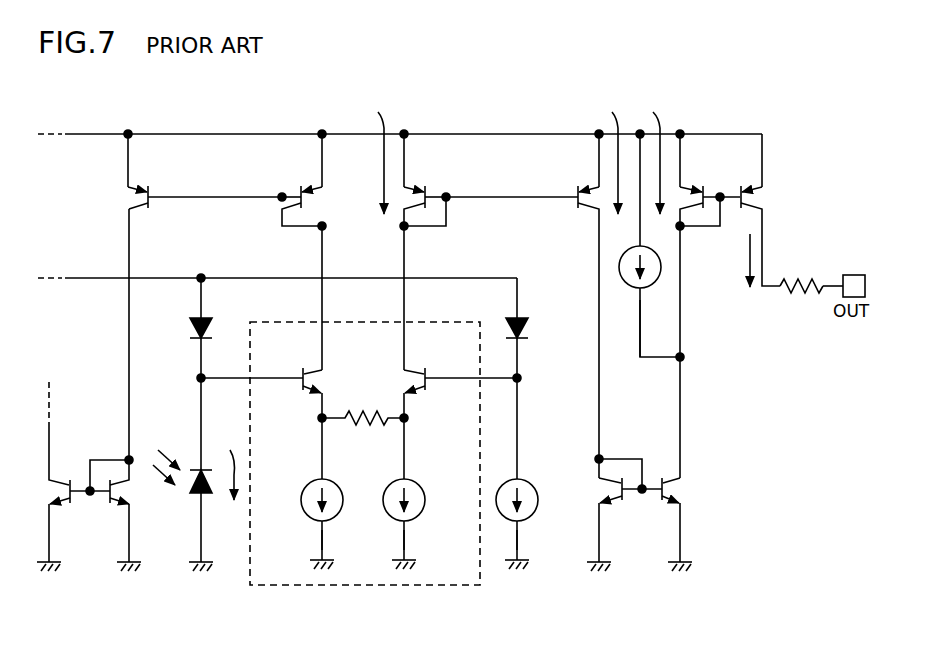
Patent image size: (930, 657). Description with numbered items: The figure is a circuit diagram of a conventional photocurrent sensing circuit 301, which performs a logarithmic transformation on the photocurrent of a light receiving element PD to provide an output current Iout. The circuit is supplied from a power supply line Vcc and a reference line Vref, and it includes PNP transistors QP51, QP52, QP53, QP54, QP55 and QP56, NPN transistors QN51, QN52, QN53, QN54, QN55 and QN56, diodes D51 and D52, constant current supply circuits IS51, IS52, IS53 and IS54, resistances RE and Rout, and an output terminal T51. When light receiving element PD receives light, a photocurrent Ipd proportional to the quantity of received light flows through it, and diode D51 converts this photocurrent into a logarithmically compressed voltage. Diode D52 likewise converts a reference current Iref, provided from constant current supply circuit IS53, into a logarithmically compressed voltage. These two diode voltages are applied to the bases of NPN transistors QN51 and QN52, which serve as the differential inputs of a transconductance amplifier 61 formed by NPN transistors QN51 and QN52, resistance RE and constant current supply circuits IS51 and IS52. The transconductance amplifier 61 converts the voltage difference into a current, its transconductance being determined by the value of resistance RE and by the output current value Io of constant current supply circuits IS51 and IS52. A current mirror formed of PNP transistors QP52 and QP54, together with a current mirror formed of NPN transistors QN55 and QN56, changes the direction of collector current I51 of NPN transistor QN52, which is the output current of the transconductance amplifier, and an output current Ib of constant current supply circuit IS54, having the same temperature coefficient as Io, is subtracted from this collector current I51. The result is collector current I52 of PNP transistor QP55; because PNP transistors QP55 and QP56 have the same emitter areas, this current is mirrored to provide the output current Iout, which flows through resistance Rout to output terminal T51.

The photocurrent sensing circuit 301 is at (860, 96).
The transconductance amplifier 61 is at (364, 586).
The power supply line Vcc is at (90, 133).
The reference voltage line Vref is at (94, 277).
The PNP transistor QP51 is at (299, 190).
The PNP transistor QP52 is at (440, 170).
The PNP transistor QP53 is at (165, 170).
The PNP transistor QP54 is at (577, 190).
The PNP transistor QP55 is at (705, 190).
The PNP transistor QP56 is at (763, 197).
The NPN transistor QN51 is at (301, 372).
The NPN transistor QN52 is at (428, 372).
The NPN transistor QN53 is at (108, 499).
The NPN transistor QN54 is at (72, 480).
The NPN transistor QN55 is at (622, 500).
The NPN transistor QN56 is at (660, 480).
The diode D51 is at (210, 322).
The diode D52 is at (510, 322).
The light receiving element PD is at (196, 492).
The resistance RE is at (362, 412).
The constant current supply circuit IS51 is at (344, 490).
The constant current supply circuit IS52 is at (426, 490).
The constant current supply circuit IS53 is at (539, 490).
The constant current supply circuit IS54 is at (619, 267).
The resistance Rout is at (801, 293).
The output terminal T51 is at (855, 274).
The collector current I51 is at (370, 151).
The collector current I52 is at (648, 151).
The output current Iout is at (747, 258).
The output current Ib is at (633, 345).
The photocurrent Ipd is at (223, 465).
The output current value Io is at (322, 540).
The reference current Iref is at (518, 540).